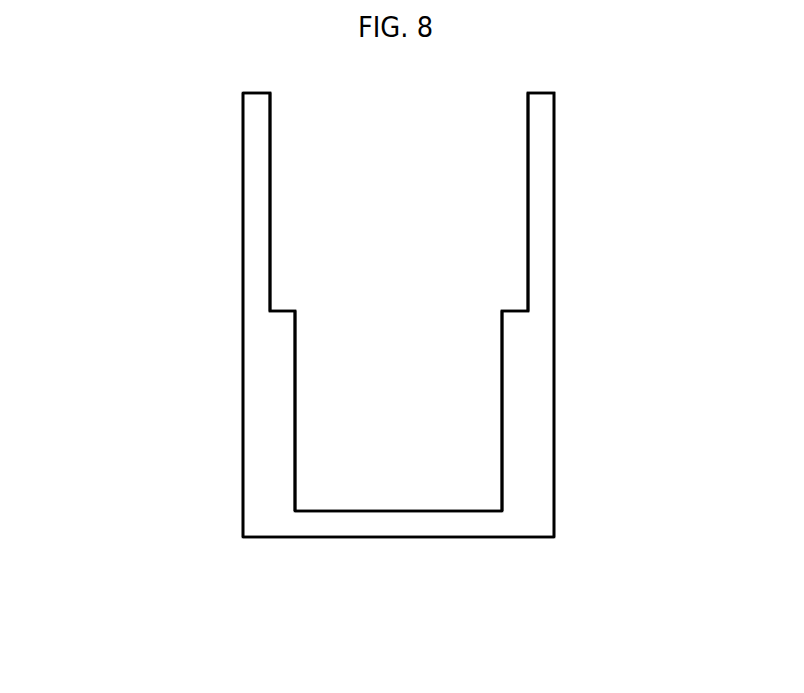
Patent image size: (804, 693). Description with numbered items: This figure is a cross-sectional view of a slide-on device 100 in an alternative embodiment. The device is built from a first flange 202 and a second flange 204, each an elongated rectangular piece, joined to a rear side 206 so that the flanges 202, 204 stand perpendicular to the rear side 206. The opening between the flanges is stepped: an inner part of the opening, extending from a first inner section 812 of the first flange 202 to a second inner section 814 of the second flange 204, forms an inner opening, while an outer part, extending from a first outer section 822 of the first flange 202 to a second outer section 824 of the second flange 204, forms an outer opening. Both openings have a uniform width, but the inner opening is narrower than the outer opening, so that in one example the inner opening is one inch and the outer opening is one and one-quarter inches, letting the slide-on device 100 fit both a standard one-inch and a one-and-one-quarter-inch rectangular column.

The slide-on device 100 is at (595, 180).
The first flange 202 is at (222, 325).
The second flange 204 is at (573, 332).
The rear side 206 is at (425, 547).
The first inner section 812 is at (300, 392).
The second inner section 814 is at (497, 472).
The first outer section 822 is at (280, 132).
The second outer section 824 is at (524, 278).